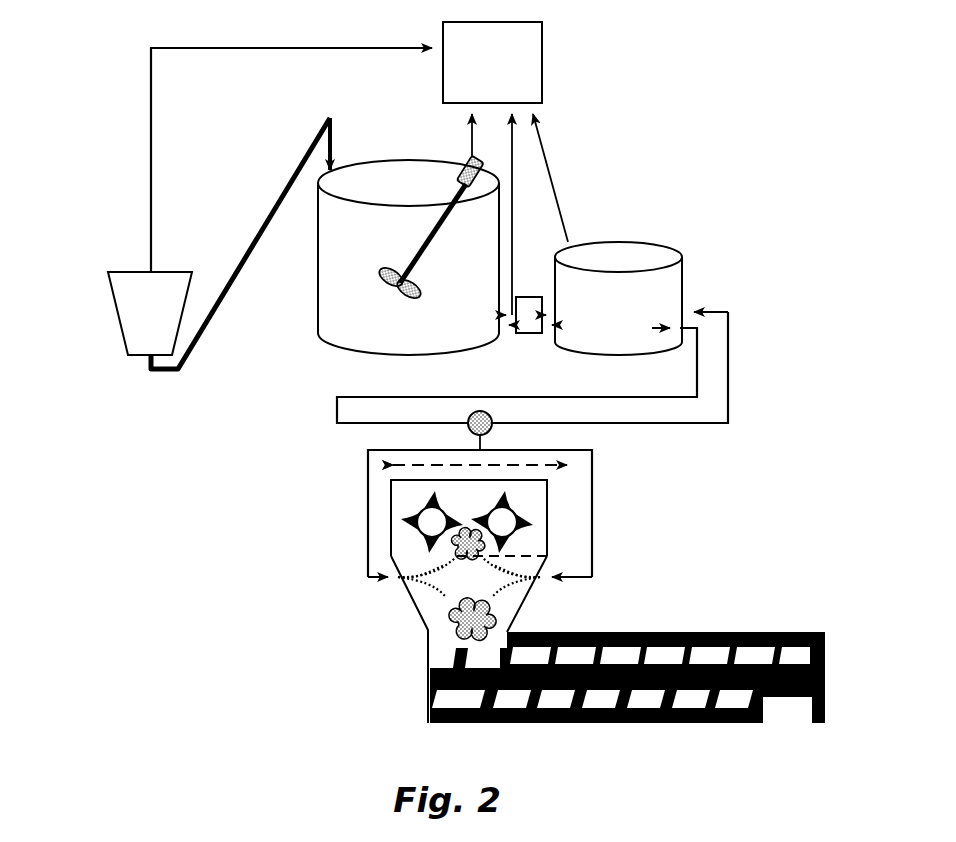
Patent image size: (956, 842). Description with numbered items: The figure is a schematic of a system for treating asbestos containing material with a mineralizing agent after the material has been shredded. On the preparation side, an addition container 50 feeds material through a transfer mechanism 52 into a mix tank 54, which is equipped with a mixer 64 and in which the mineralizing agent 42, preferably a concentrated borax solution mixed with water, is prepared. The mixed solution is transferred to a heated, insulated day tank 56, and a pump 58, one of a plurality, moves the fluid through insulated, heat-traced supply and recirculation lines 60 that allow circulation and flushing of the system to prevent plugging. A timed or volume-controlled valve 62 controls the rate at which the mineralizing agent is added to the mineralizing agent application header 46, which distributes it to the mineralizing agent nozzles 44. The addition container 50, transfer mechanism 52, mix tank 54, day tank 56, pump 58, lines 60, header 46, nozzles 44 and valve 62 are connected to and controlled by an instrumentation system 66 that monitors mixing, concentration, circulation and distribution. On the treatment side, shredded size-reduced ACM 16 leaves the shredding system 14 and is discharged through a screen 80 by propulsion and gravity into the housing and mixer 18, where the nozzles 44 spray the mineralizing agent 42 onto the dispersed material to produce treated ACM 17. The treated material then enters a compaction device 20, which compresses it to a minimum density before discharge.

The shredding system 14 is at (363, 511).
The size-reduced ACM 16 is at (452, 550).
The treated ACM 17 is at (453, 630).
The housing and mixer 18 is at (418, 620).
The compaction device 20 is at (425, 697).
The mineralizing agent 42 is at (425, 588).
The mineralizing agent nozzles 44 is at (540, 588).
The mineralizing agent application header 46 is at (597, 485).
The addition container 50 is at (112, 323).
The transfer mechanism 52 is at (260, 218).
The mix tank 54 is at (308, 333).
The day tank 56 is at (688, 255).
The pump 58 is at (520, 342).
The supply and recirculation lines 60 is at (728, 372).
The timed or volume-controlled valve 62 is at (463, 433).
The mixer 64 is at (462, 157).
The instrumentation system 66 is at (547, 58).
The screen 80 is at (555, 557).